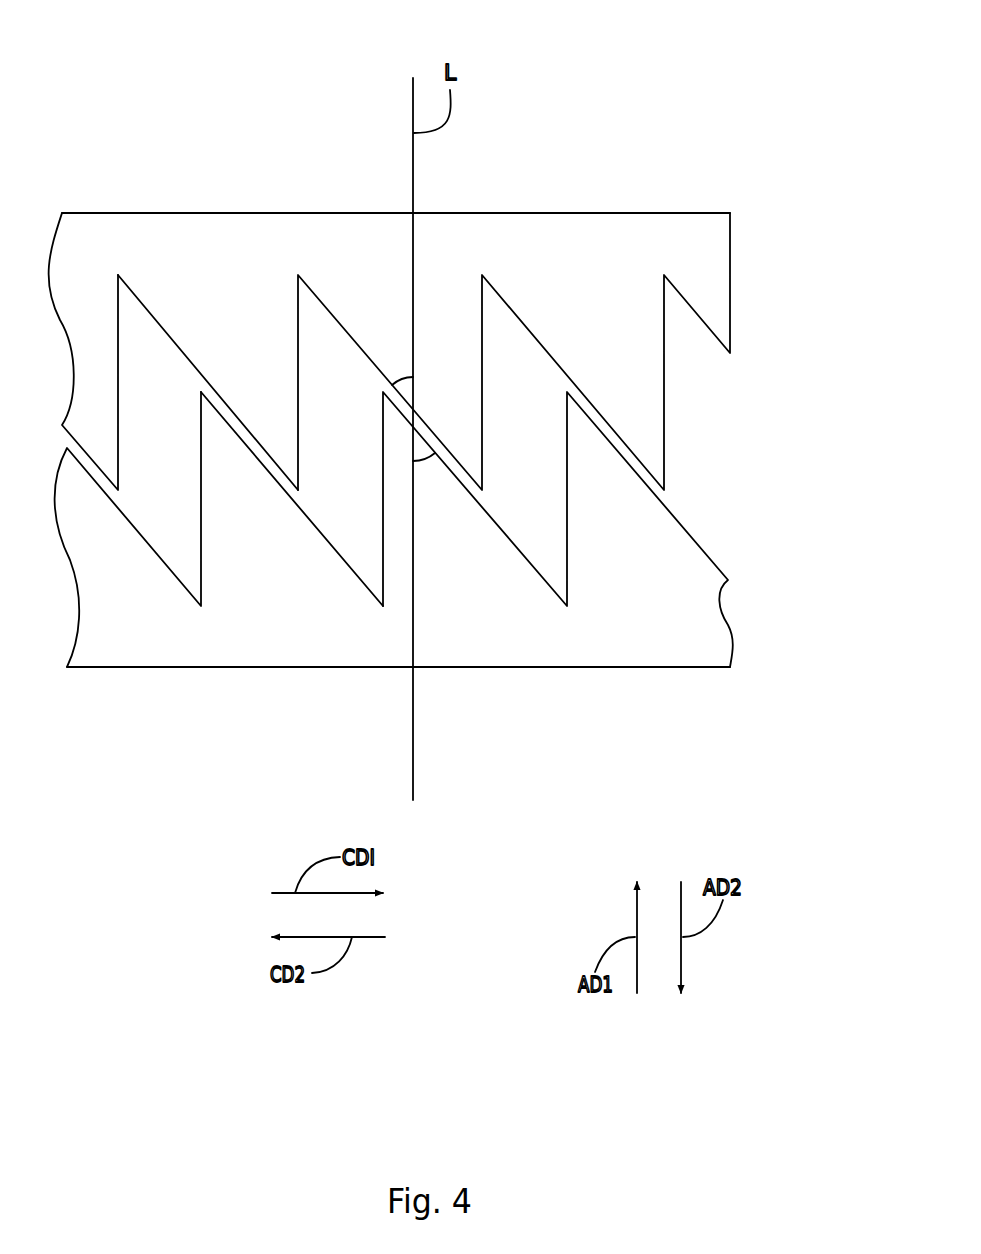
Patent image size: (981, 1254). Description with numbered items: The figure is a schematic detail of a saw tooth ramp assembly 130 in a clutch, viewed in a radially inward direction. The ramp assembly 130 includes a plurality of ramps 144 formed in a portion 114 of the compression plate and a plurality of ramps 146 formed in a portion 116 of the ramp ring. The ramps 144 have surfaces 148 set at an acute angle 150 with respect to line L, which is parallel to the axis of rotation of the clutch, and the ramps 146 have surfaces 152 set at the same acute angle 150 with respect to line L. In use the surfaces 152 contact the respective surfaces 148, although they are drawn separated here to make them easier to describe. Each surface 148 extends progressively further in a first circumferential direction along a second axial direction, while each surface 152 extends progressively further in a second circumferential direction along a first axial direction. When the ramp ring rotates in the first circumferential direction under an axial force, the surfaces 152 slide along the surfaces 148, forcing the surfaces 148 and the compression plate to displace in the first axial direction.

The ramp assembly 130 is at (784, 126).
The ramps 144 is at (142, 274).
The ramps 146 is at (298, 574).
The surfaces 148 is at (173, 339).
The surfaces 152 is at (293, 500).
The acute angle 150 is at (396, 382).
The portion of the compression plate 114 is at (653, 211).
The portion of the ramp ring 116 is at (667, 669).